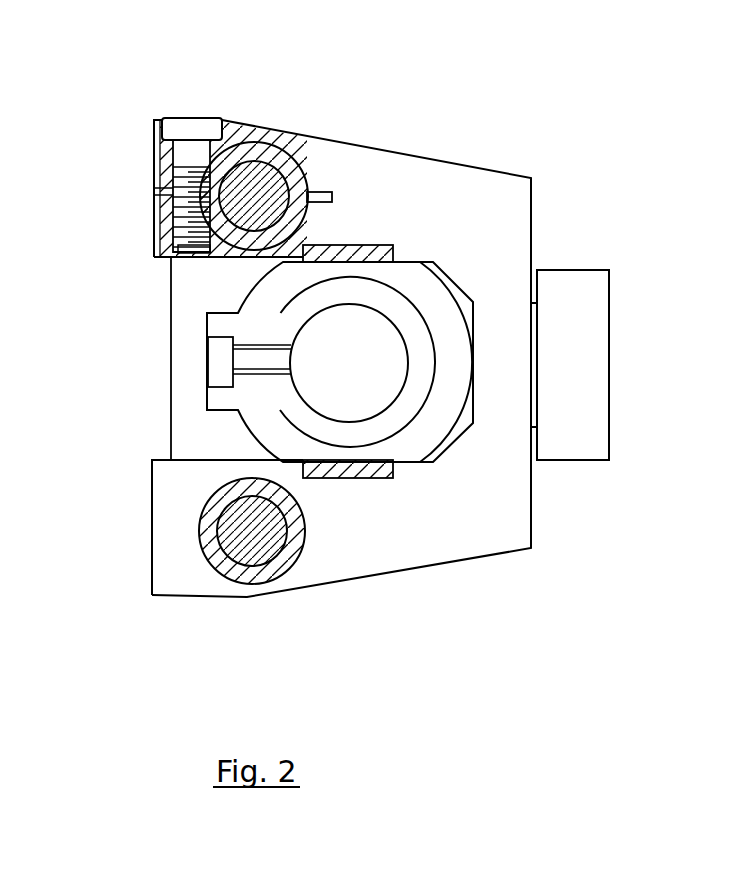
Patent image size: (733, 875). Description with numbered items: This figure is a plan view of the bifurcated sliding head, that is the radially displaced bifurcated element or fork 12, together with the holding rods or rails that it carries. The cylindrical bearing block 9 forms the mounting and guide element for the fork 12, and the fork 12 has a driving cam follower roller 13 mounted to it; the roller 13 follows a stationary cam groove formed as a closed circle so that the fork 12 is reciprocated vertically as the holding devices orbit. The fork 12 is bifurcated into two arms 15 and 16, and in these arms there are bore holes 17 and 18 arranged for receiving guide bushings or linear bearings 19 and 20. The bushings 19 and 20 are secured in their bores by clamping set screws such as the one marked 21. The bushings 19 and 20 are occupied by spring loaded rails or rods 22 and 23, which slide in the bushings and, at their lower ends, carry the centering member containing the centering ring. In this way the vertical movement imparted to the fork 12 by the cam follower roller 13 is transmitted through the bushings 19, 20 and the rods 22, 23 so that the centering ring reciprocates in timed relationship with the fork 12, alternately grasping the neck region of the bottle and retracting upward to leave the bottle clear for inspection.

The cylindrical bearing block 9 is at (423, 297).
The fork 12 is at (463, 518).
The driving cam follower roller 13 is at (578, 340).
The arm 15 is at (240, 143).
The arm 16 is at (168, 560).
The bore hole 17 is at (264, 143).
The bore hole 18 is at (236, 582).
The guide bushing 19 is at (197, 257).
The guide bushing 20 is at (290, 552).
The clamping set screw 21 is at (187, 158).
The spring loaded rod 22 is at (245, 203).
The spring loaded rod 23 is at (237, 518).